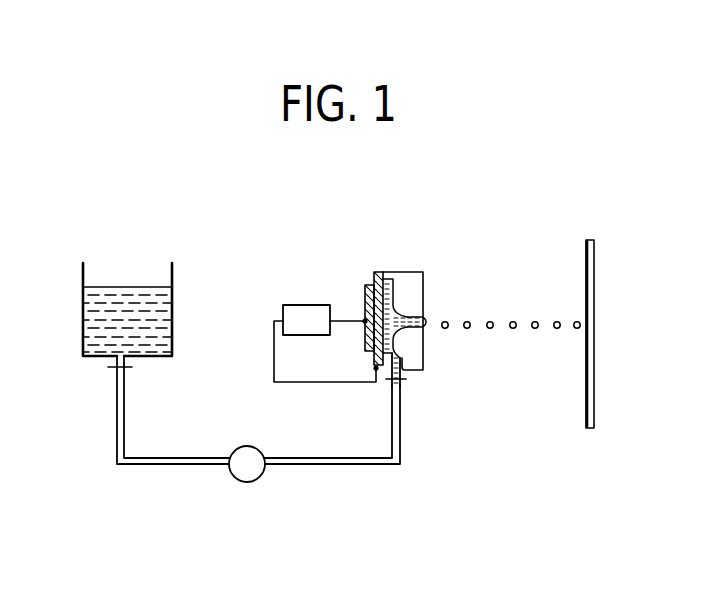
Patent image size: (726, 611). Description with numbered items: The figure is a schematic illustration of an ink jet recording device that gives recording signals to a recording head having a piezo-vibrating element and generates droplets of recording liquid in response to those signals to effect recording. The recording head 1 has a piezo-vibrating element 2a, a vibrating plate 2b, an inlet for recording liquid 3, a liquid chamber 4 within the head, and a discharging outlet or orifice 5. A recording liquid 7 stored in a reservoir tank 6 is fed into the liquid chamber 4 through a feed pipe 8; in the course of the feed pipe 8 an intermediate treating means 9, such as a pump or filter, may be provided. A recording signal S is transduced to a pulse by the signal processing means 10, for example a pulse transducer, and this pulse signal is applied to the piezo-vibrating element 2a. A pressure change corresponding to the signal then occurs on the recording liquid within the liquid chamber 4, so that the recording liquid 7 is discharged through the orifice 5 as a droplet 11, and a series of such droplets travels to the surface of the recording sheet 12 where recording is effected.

The recording head 1 is at (423, 271).
The piezo-vibrating element 2a is at (367, 285).
The vibrating plate 2b is at (380, 272).
The inlet for recording liquid 3 is at (401, 361).
The liquid chamber 4 is at (394, 289).
The discharging outlet (discharging orifice) 5 is at (427, 330).
The reservoir tank 6 is at (83, 310).
The recording liquid 7 is at (86, 345).
The feed pipe 8 is at (158, 470).
The intermediate treating means 9 is at (247, 483).
The signal processing means 10 is at (291, 305).
The droplet 11 is at (513, 320).
The recording sheet 12 is at (586, 410).
The recording signal S is at (310, 305).